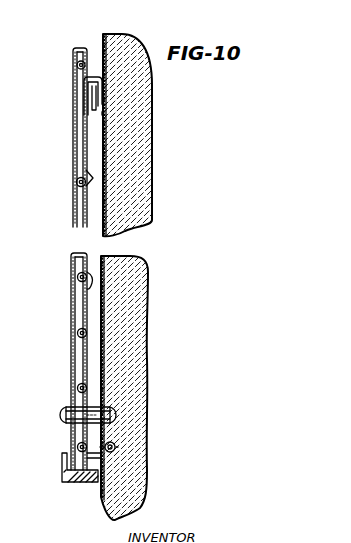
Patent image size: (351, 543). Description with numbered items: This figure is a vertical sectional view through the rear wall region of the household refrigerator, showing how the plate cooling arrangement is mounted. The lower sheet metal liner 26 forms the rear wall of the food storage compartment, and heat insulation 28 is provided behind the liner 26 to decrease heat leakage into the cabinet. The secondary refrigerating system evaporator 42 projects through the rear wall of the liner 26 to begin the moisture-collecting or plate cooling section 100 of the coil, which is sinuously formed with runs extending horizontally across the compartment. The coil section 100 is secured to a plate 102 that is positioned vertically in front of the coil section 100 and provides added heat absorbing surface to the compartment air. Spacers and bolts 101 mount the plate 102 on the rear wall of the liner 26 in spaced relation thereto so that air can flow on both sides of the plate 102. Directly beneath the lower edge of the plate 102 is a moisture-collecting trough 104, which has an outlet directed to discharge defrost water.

The lower sheet metal liner 26 is at (102, 36).
The heat insulation 28 is at (147, 103).
The secondary refrigerating system evaporator 42 is at (120, 446).
The plate cooling section 100 is at (76, 163).
The spacers and bolts 101 is at (62, 415).
The plate 102 is at (73, 131).
The moisture-collecting trough 104 is at (80, 487).